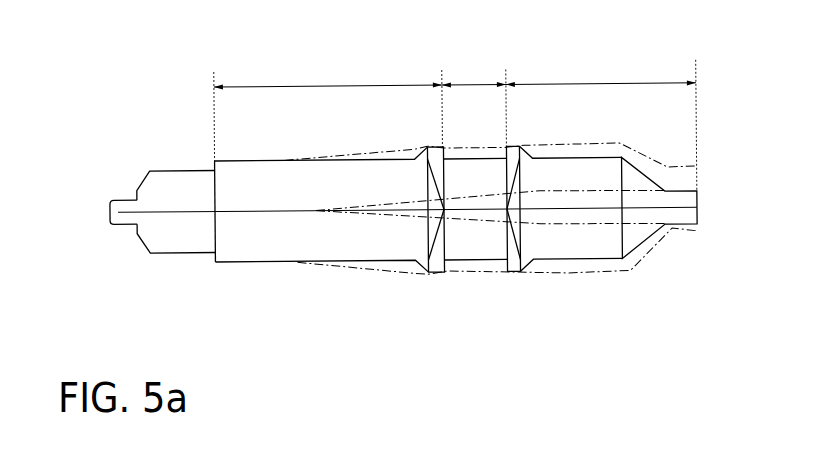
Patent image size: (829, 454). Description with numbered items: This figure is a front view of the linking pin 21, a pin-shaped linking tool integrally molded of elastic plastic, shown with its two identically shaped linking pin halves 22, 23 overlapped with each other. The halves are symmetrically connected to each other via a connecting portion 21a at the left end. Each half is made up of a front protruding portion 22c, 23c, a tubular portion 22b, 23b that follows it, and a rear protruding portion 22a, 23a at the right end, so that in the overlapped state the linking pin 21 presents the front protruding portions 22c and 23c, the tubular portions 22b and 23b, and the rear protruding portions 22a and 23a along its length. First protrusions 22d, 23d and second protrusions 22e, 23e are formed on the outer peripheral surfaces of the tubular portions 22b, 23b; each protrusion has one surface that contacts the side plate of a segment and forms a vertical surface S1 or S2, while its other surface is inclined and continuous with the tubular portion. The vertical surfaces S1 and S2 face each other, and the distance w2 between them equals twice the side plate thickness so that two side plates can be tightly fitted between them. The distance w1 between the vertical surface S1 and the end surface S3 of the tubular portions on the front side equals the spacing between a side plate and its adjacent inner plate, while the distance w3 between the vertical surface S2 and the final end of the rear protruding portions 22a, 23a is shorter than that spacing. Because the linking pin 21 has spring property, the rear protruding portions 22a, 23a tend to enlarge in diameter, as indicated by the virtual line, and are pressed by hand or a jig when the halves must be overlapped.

The linking pin 21 is at (386, 79).
The connecting portion 21a is at (108, 223).
The linking pin half 22 is at (365, 140).
The protruding portion 22a is at (668, 197).
The tubular portion 22b is at (268, 161).
The protruding portion 22c is at (167, 170).
The first protrusion 22d is at (428, 148).
The second protrusion 22e is at (513, 148).
The linking pin half 23 is at (366, 294).
The protruding portion 23a is at (695, 233).
The tubular portion 23b is at (263, 263).
The protruding portion 23c is at (186, 253).
The first protrusion 23d is at (445, 275).
The second protrusion 23e is at (520, 275).
The vertical surface S1 is at (445, 150).
The vertical surface S2 is at (506, 150).
The end surface S3 is at (214, 161).
The distance w1 is at (328, 72).
The distance w2 is at (474, 72).
The distance w3 is at (601, 124).